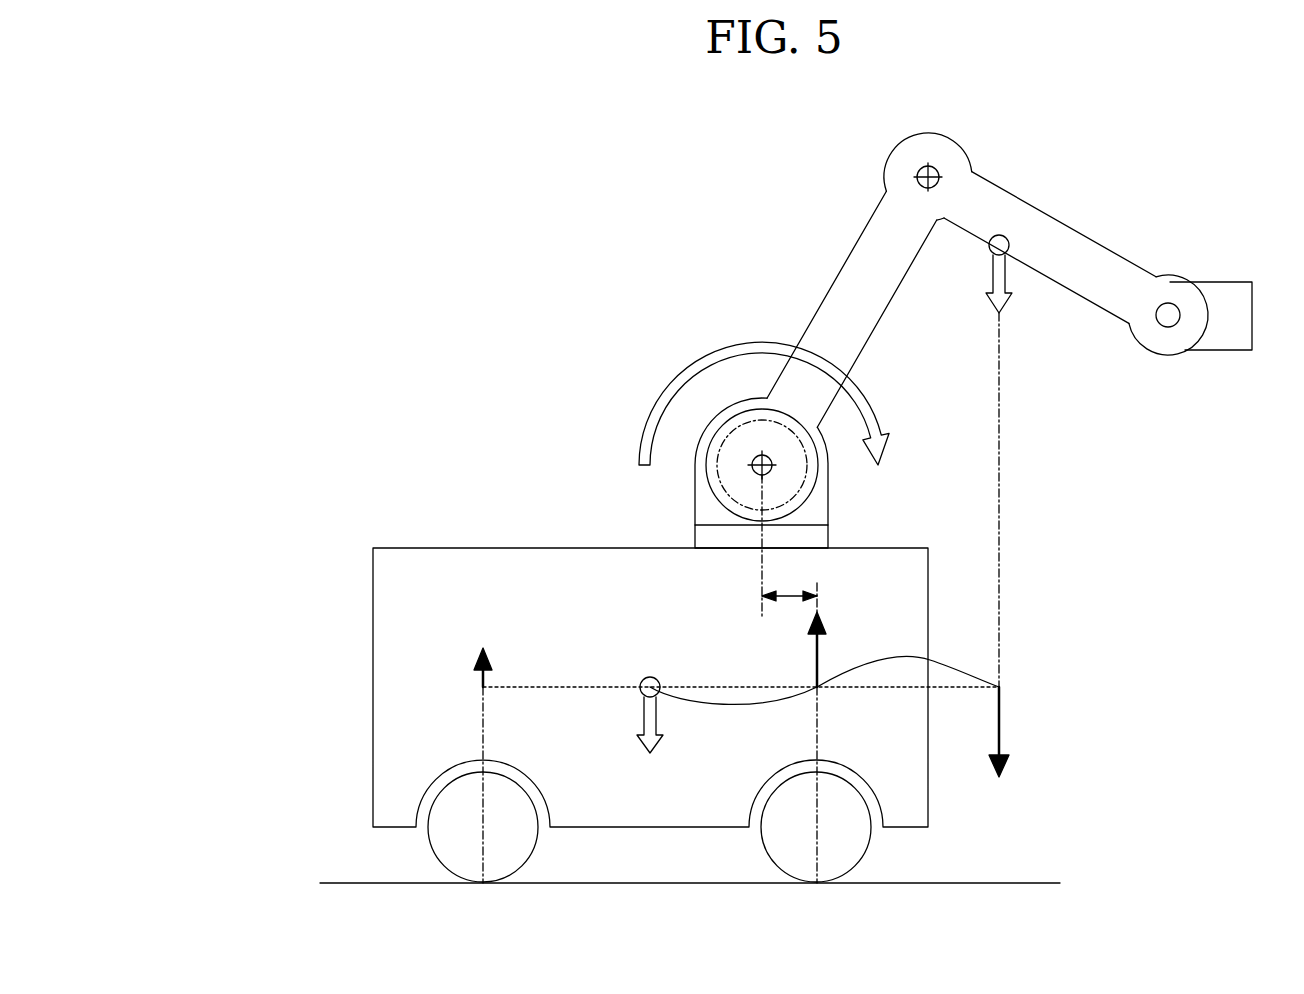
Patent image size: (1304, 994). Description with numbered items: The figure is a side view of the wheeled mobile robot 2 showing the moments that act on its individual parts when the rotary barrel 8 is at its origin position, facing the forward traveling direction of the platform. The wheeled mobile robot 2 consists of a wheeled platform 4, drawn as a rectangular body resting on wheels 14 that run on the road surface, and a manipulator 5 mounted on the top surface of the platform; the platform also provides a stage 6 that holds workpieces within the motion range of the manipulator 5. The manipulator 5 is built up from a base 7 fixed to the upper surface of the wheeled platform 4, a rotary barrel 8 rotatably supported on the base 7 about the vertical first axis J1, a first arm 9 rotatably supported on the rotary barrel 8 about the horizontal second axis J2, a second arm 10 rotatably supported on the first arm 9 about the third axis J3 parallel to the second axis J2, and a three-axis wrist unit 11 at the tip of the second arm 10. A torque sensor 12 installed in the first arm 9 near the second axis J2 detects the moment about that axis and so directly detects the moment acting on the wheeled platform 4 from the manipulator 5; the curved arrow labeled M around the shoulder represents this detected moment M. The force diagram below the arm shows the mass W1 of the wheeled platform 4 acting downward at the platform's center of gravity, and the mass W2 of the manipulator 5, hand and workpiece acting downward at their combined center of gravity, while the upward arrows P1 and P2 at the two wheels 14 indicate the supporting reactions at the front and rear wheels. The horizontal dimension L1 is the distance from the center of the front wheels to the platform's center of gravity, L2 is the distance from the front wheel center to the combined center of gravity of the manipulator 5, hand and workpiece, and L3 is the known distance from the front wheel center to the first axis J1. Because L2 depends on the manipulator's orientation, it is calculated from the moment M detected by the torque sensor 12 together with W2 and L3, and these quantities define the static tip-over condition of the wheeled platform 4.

The wheeled mobile robot 2 is at (513, 130).
The wheeled platform 4 is at (361, 605).
The manipulator 5 is at (855, 202).
The stage 6 is at (457, 548).
The base 7 is at (695, 537).
The rotary barrel 8 is at (695, 462).
The first arm 9 is at (844, 262).
The second arm 10 is at (972, 172).
The three-axis wrist unit 11 is at (1177, 267).
The torque sensor 12 is at (817, 467).
The wheels 14 is at (438, 862).
The first axis J1 is at (760, 574).
The second axis J2 is at (767, 472).
The third axis J3 is at (922, 168).
The moment M is at (764, 392).
The reaction force at front wheel P1 is at (465, 763).
The reaction force at rear wheel P2 is at (835, 733).
The mass of the wheeled platform W1 is at (630, 715).
The mass of the manipulator, hand and workpiece W2 is at (1016, 506).
The distance from front wheel center to platform center of gravity L1 is at (741, 714).
The distance from front wheel center to manipulator center of gravity L2 is at (908, 655).
The distance from front wheel center to first axis L3 is at (789, 581).